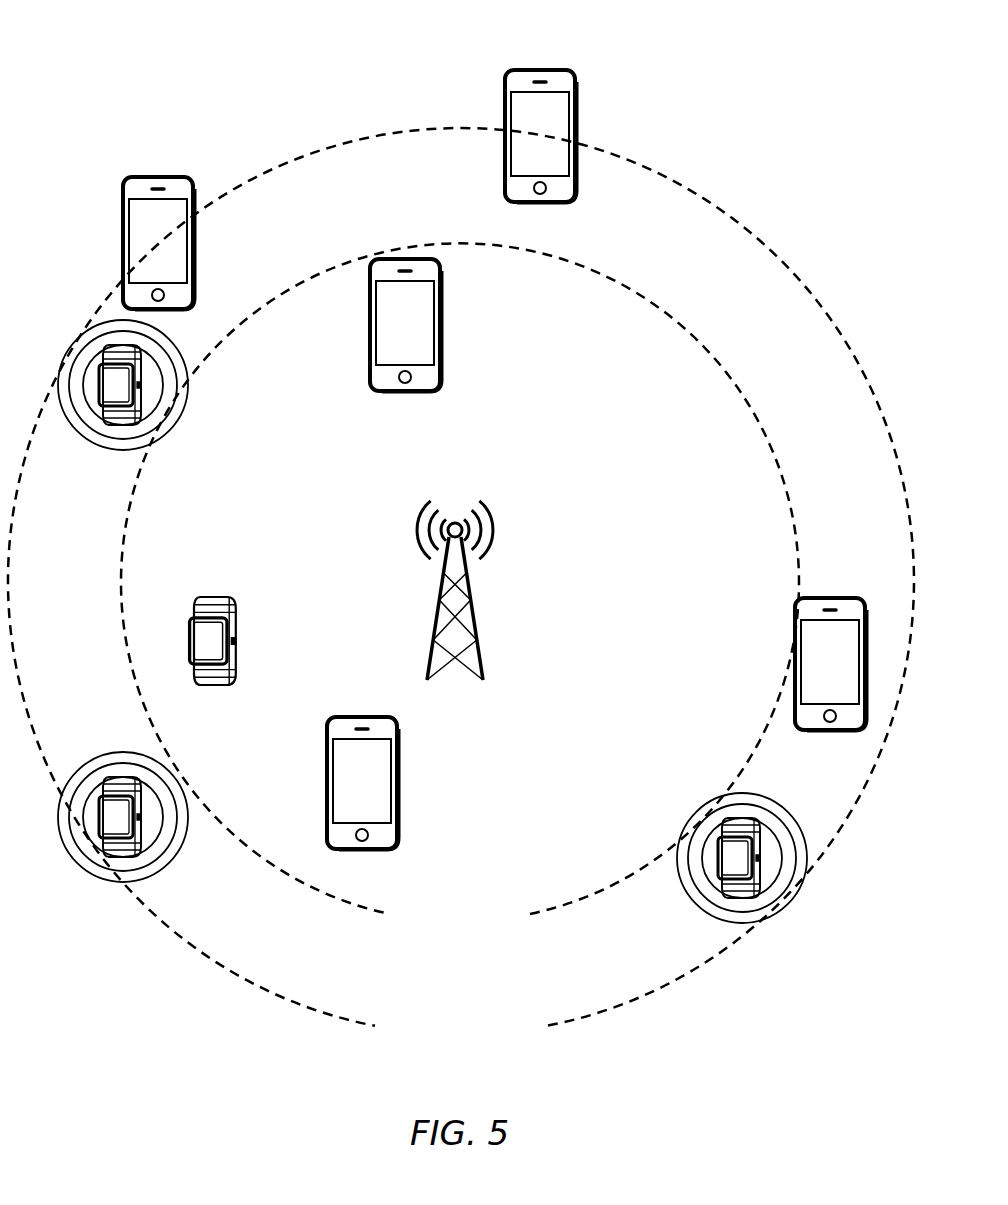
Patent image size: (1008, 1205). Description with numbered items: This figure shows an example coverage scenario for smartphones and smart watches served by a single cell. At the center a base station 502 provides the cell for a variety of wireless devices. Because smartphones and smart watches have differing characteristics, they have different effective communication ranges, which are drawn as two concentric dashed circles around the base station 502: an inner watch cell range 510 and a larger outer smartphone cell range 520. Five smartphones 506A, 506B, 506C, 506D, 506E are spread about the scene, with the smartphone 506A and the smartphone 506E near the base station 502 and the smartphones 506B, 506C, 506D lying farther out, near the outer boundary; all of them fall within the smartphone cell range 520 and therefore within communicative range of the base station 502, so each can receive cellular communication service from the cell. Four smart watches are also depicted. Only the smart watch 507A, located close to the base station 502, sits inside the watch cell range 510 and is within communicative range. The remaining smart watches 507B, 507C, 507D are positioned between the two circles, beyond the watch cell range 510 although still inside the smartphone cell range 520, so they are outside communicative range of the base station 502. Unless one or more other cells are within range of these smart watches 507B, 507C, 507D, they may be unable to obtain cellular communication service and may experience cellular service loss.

The base station 502 is at (474, 628).
The smartphone 506A is at (360, 716).
The smartphone 506B is at (148, 176).
The smartphone 506C is at (535, 69).
The smartphone 506D is at (832, 597).
The smartphone 506E is at (442, 334).
The smart watch 507A is at (243, 625).
The smart watch 507B is at (102, 450).
The smart watch 507C is at (104, 752).
The smart watch 507D is at (700, 906).
The watch cell range 510 is at (460, 601).
The smartphone cell range 520 is at (461, 603).